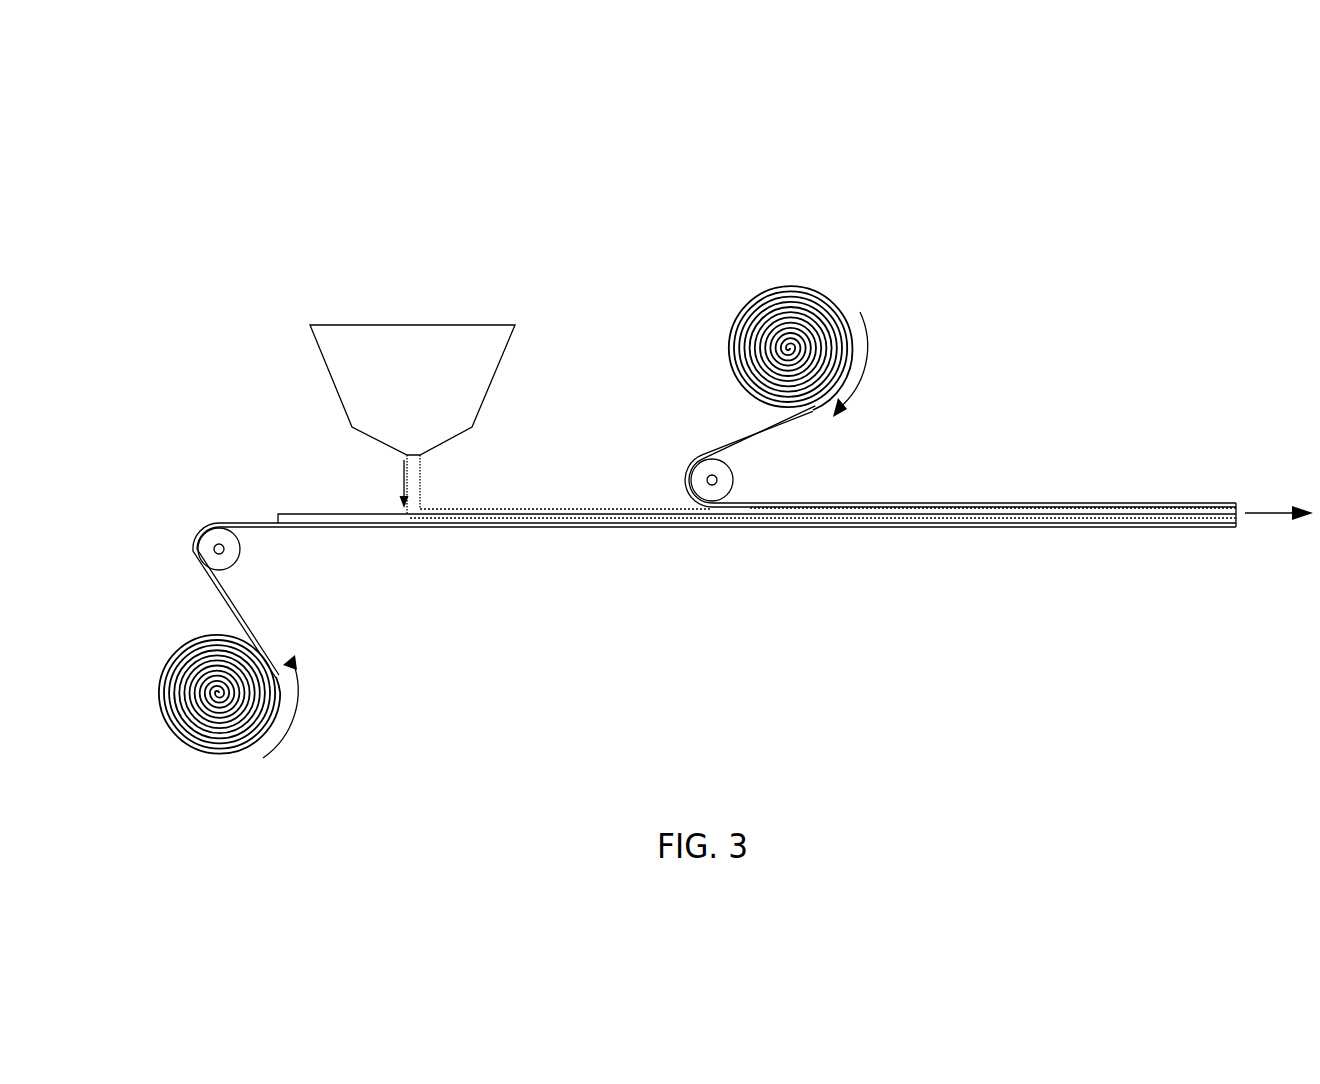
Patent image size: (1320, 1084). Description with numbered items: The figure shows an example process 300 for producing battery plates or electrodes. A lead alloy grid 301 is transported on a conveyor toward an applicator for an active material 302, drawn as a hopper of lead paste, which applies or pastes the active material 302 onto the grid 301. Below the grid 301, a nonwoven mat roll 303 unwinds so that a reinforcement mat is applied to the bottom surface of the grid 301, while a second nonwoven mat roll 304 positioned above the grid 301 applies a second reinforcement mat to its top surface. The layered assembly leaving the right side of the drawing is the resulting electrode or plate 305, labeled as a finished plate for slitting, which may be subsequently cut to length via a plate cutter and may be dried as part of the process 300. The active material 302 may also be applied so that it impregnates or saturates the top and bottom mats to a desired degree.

The process 300 is at (707, 520).
The lead alloy grid 301 is at (739, 460).
The active material 302 is at (511, 419).
The nonwoven mat roll 303 is at (200, 662).
The second nonwoven mat roll 304 is at (810, 329).
The electrode or plate 305 is at (1031, 482).